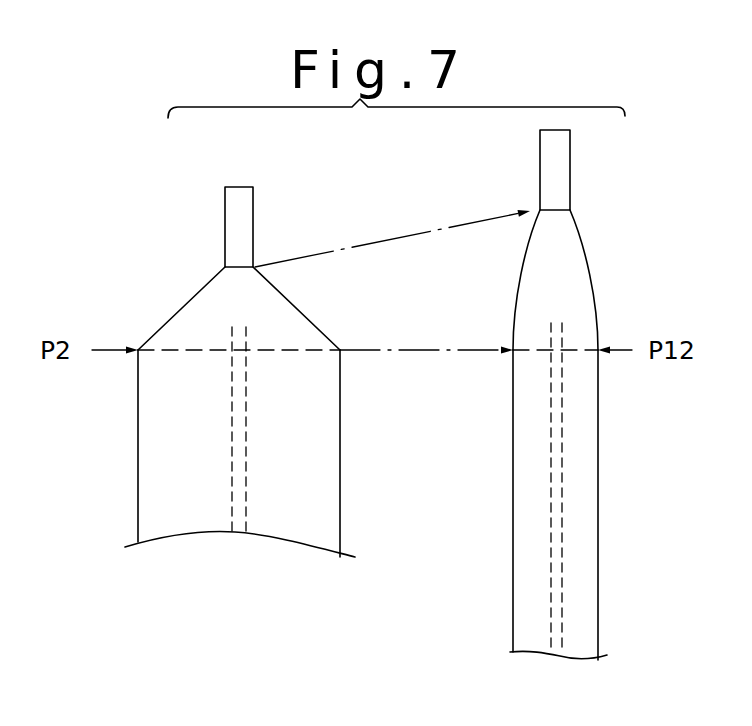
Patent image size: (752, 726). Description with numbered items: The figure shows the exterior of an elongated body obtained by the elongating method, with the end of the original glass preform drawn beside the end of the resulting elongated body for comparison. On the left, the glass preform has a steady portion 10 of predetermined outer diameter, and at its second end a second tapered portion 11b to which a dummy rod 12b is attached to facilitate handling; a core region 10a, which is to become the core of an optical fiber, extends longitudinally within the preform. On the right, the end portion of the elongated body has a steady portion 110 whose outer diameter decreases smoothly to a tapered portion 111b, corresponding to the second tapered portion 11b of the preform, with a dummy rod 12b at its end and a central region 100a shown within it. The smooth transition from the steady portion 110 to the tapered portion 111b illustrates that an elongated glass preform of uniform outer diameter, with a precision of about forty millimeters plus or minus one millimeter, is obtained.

The dummy rod 12b is at (240, 221).
The second tapered portion 11b is at (275, 313).
The steady portion 10 is at (307, 412).
The core region 10a is at (248, 477).
The tapered portion 111b is at (567, 266).
The steady portion 110 is at (585, 468).
The central bore of second nozzle 100a is at (563, 513).